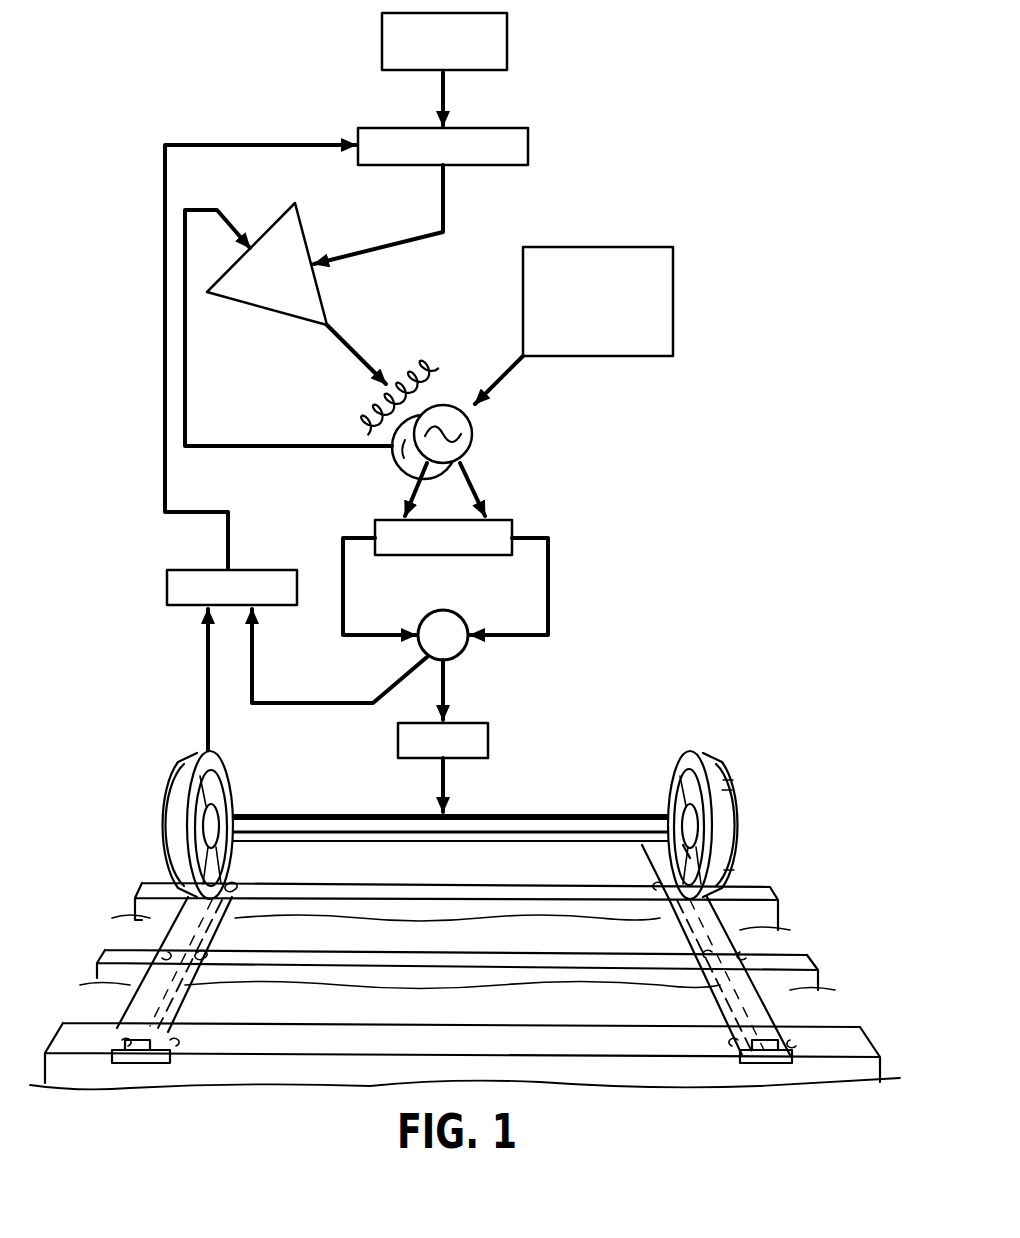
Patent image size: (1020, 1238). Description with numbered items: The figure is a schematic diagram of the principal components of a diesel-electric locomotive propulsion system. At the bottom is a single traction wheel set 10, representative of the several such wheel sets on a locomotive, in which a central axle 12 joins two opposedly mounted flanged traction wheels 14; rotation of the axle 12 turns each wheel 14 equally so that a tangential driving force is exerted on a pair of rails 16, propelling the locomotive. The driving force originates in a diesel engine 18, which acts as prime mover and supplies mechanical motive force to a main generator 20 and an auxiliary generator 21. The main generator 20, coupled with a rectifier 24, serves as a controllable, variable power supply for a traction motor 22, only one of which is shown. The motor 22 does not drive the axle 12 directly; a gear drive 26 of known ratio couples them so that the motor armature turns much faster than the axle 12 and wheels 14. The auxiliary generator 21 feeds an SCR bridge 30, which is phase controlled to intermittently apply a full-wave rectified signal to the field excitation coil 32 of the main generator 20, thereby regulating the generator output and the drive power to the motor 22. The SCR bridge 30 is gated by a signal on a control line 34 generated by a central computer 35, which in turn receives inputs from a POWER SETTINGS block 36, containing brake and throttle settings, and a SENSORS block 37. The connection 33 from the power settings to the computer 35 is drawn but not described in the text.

The traction wheel set 10 is at (718, 746).
The central axle 12 is at (582, 815).
The flanged traction wheels 14 is at (228, 765).
The rails 16 is at (127, 1005).
The diesel engine 18 is at (597, 358).
The main generator 20 is at (456, 460).
The auxiliary generator 21 is at (397, 468).
The traction motor 22 is at (468, 647).
The rectifier 24 is at (512, 520).
The gear drive 26 is at (488, 740).
The SCR bridge 30 is at (273, 312).
The field excitation coil 32 is at (422, 353).
The power setting signal 33 is at (447, 88).
The control line 34 is at (447, 195).
The central computer 35 is at (528, 150).
The POWER SETTINGS block 36 is at (382, 32).
The SENSORS block 37 is at (265, 567).